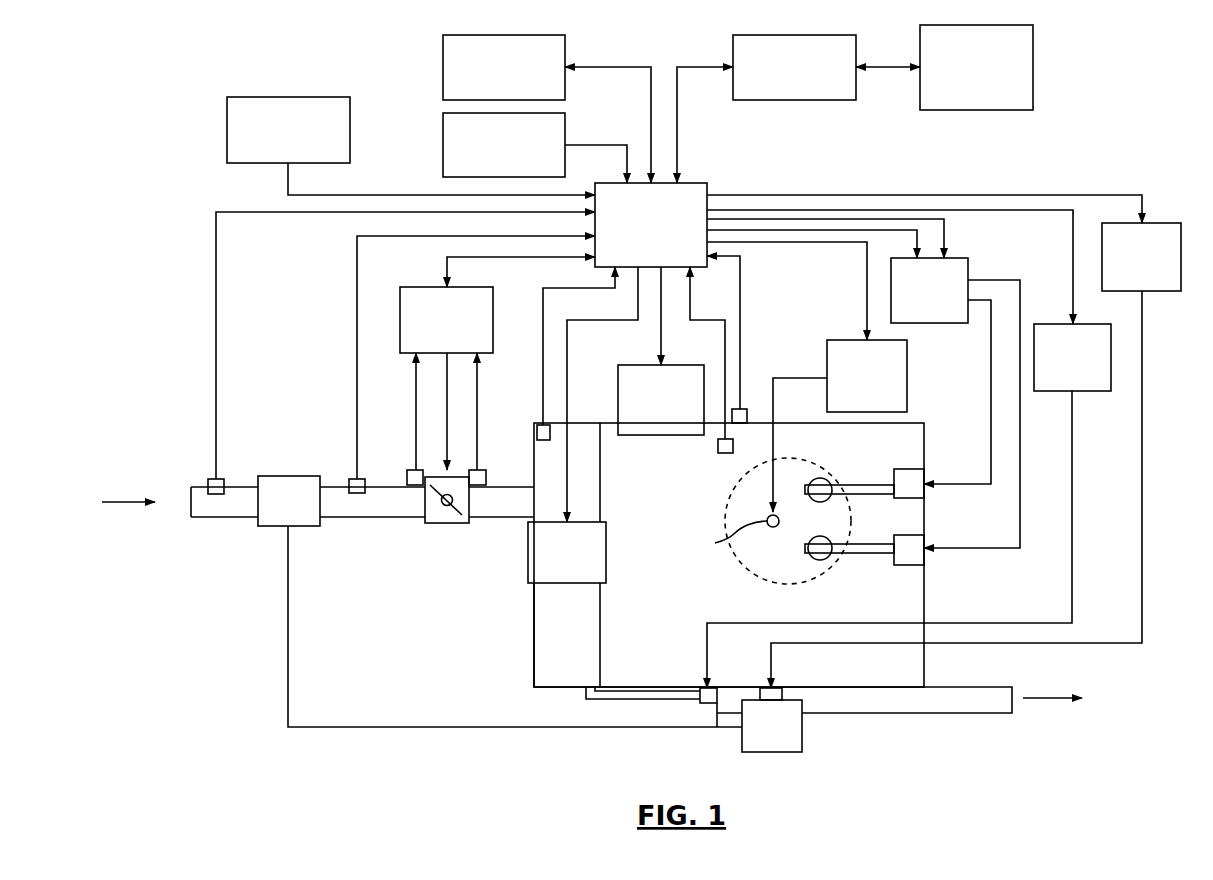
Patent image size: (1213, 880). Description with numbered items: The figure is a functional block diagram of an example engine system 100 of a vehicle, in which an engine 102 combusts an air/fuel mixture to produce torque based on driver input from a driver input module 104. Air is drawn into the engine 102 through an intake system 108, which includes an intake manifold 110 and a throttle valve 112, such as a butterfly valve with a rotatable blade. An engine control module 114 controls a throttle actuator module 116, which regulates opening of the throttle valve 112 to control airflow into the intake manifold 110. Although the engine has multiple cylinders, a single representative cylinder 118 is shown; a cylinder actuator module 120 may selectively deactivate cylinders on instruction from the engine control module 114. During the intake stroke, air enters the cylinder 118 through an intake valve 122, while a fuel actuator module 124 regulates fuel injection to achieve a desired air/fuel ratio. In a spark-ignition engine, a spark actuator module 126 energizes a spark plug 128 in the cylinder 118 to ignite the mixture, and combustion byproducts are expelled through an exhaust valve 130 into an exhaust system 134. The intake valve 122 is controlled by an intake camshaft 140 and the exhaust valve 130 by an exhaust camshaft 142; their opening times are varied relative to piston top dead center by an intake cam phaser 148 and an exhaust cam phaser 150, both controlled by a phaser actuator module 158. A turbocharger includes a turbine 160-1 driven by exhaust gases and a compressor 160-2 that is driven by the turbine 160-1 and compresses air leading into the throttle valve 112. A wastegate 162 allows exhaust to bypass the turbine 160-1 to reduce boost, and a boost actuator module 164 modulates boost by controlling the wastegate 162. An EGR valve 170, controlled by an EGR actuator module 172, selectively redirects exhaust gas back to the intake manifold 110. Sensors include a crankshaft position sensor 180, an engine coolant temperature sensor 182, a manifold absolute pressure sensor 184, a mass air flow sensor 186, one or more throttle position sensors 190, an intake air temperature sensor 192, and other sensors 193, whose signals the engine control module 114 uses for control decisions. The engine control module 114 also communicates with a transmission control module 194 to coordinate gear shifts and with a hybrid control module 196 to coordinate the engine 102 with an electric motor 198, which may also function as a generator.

The engine system 100 is at (166, 94).
The engine 102 is at (924, 438).
The driver input module 104 is at (443, 146).
The intake system 108 is at (520, 517).
The intake manifold 110 is at (534, 625).
The throttle valve 112 is at (447, 523).
The engine control module 114 is at (707, 192).
The throttle actuator module 116 is at (415, 287).
The cylinder 118 is at (756, 574).
The cylinder actuator module 120 is at (675, 365).
The intake valve 122 is at (820, 485).
The fuel actuator module 124 is at (592, 583).
The spark actuator module 126 is at (907, 378).
The spark plug 128 is at (737, 543).
The exhaust valve 130 is at (820, 560).
The exhaust system 134 is at (987, 713).
The intake camshaft 140 is at (868, 462).
The exhaust camshaft 142 is at (868, 553).
The intake cam phaser 148 is at (906, 469).
The exhaust cam phaser 150 is at (908, 565).
The phaser actuator module 158 is at (968, 270).
The turbine 160-1 is at (802, 728).
The compressor 160-2 is at (272, 526).
The wastegate 162 is at (782, 694).
The boost actuator module 164 is at (1160, 291).
The EGR valve 170 is at (707, 703).
The EGR actuator module 172 is at (1090, 391).
The crankshaft position sensor 180 is at (742, 409).
The engine coolant temperature sensor 182 is at (725, 453).
The manifold absolute pressure sensor 184 is at (543, 425).
The mass air flow sensor 186 is at (349, 480).
The throttle position sensor 190 is at (414, 485).
The intake air temperature sensor 192 is at (208, 484).
The other sensors 193 is at (288, 97).
The transmission control module 194 is at (443, 67).
The hybrid control module 196 is at (798, 100).
The electric motor 198 is at (987, 110).